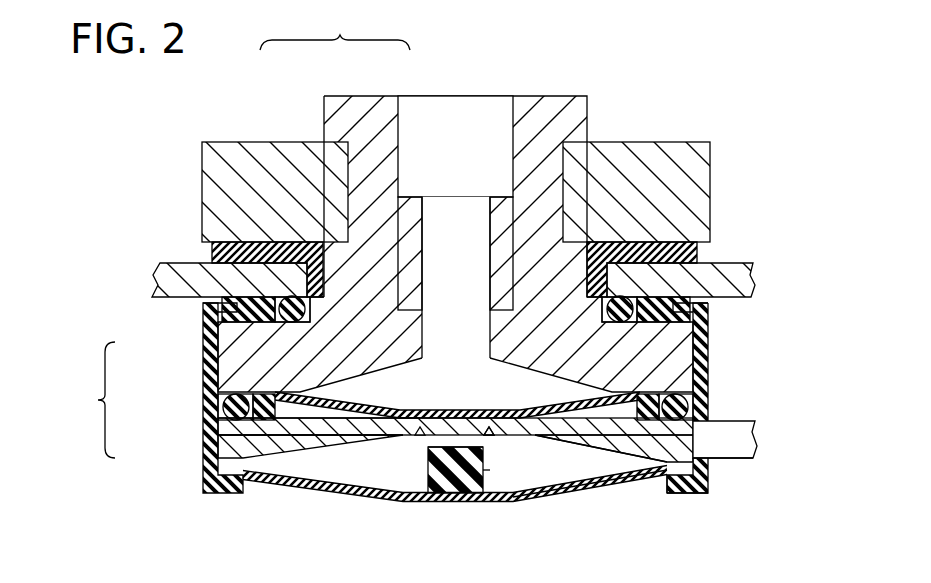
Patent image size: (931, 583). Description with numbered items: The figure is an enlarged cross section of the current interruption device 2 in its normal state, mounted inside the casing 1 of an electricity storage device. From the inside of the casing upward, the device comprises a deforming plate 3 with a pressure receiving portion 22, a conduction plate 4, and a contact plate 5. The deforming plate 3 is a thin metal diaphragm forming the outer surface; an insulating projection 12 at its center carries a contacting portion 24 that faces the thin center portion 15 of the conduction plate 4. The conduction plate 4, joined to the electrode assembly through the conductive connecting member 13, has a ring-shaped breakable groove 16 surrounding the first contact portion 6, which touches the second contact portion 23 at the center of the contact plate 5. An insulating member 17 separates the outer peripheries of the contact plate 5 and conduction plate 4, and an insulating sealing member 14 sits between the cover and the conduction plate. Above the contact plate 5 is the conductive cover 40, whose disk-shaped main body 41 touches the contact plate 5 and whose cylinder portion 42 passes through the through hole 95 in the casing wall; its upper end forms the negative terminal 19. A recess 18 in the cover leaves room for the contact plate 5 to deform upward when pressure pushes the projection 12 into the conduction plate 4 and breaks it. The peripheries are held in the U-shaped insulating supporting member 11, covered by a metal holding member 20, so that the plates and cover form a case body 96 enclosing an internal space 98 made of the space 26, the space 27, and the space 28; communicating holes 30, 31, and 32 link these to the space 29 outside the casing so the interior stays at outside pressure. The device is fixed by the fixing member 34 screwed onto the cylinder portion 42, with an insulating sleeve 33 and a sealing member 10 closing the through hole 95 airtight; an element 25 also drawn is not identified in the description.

The casing 1 is at (740, 285).
The current interruption device 2 is at (766, 344).
The deforming plate 3 is at (308, 483).
The conduction plate 4 is at (347, 440).
The contact plate 5 is at (612, 392).
The first contact portion 6 is at (402, 432).
The sealing member 10 is at (628, 327).
The supporting member 11 is at (692, 478).
The projection 12 is at (499, 444).
The connecting member 13 is at (728, 452).
The sealing member 14 is at (728, 433).
The center portion 15 is at (350, 430).
The breakable groove 16 is at (501, 472).
The insulating member 17 is at (650, 392).
The recess 18 is at (513, 362).
The negative terminal 19 is at (722, 99).
The holding member 20 is at (678, 493).
The pressure receiving portion 22 is at (457, 452).
The second contact portion 23 is at (557, 437).
The contacting portion 24 is at (438, 446).
The cup 25 is at (171, 506).
The space 26 is at (283, 464).
The space 27 is at (286, 409).
The space 28 is at (434, 356).
The space outside the casing 29 is at (172, 132).
The communicating hole 30 is at (612, 478).
The communicating hole 31 is at (620, 492).
The communicating hole 32 is at (422, 245).
The insulating sleeve 33 is at (213, 252).
The fixing member 34 is at (605, 150).
The cover 40 is at (335, 29).
The main body 41 is at (263, 333).
The cylinder portion 42 is at (362, 115).
The through hole 95 is at (590, 245).
The case body 96 is at (727, 485).
The internal space 98 is at (88, 400).